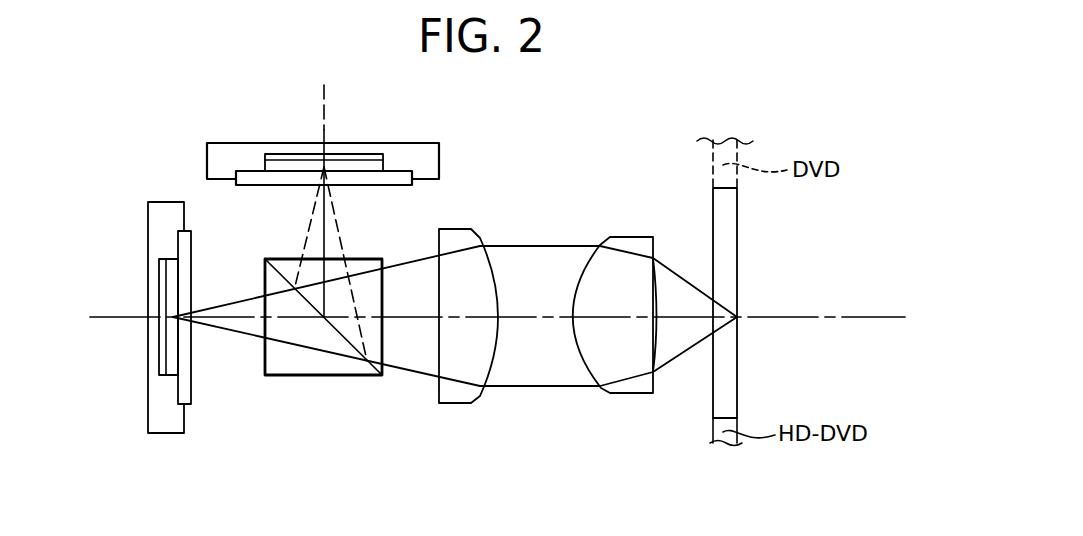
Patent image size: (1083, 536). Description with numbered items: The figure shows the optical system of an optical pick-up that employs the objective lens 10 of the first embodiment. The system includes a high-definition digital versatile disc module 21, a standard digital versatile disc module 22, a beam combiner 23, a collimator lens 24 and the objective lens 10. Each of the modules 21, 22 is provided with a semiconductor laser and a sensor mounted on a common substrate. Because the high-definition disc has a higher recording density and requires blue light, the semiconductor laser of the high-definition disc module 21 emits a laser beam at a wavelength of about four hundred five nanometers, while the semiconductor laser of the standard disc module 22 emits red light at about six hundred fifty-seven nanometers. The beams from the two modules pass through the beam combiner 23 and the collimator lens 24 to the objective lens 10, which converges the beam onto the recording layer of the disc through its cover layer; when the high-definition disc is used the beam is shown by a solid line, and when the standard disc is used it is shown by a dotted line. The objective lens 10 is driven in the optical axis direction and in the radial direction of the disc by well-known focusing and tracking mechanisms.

The objective lens 10 is at (633, 393).
The HD-DVD module 21 is at (167, 433).
The DVD module 22 is at (432, 155).
The beam combiner 23 is at (322, 377).
The collimator lens 24 is at (458, 403).